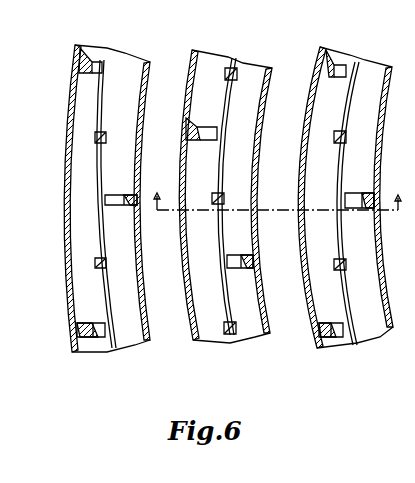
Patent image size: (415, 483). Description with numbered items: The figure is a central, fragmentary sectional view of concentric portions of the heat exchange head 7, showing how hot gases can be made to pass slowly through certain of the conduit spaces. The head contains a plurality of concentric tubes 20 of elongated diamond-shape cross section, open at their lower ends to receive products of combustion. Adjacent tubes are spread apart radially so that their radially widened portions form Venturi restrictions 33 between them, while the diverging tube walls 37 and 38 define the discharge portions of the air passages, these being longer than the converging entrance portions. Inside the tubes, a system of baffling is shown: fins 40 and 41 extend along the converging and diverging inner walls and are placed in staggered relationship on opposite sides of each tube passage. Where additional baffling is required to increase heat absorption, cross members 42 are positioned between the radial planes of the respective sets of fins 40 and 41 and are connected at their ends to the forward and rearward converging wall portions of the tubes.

The section line 7- 7 is at (276, 193).
The concentric tubes 20 is at (218, 205).
The Venturi restrictions 33 is at (263, 201).
The diverging tube wall 37 is at (195, 198).
The diverging tube wall 38 is at (230, 203).
The fins 40 is at (118, 205).
The fins 41 is at (99, 75).
The cross members 42 is at (106, 265).